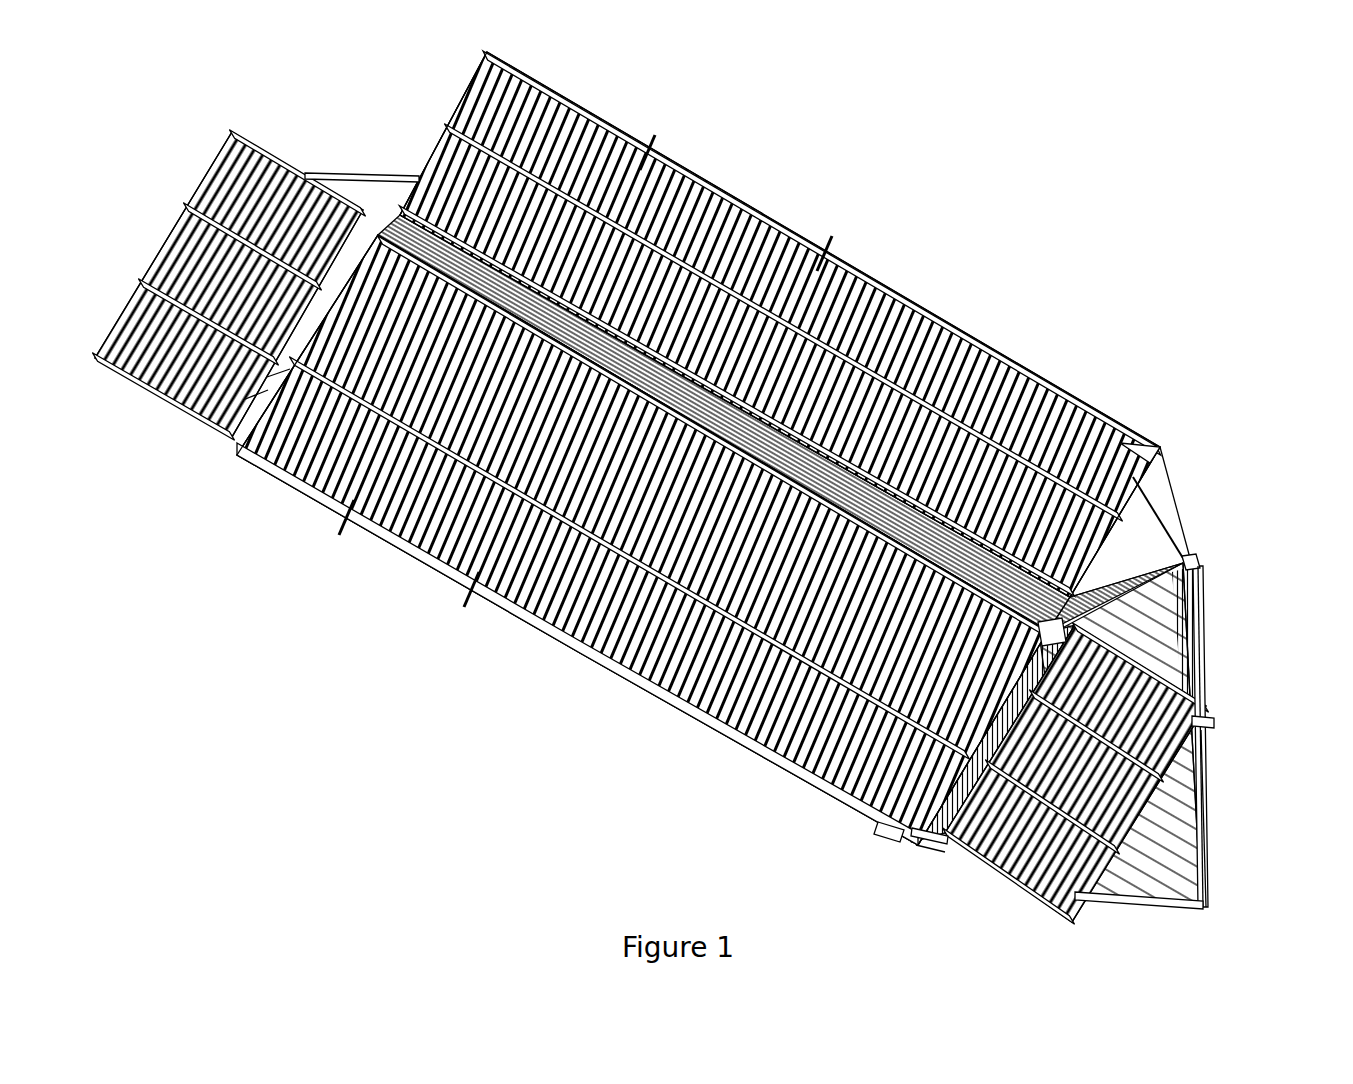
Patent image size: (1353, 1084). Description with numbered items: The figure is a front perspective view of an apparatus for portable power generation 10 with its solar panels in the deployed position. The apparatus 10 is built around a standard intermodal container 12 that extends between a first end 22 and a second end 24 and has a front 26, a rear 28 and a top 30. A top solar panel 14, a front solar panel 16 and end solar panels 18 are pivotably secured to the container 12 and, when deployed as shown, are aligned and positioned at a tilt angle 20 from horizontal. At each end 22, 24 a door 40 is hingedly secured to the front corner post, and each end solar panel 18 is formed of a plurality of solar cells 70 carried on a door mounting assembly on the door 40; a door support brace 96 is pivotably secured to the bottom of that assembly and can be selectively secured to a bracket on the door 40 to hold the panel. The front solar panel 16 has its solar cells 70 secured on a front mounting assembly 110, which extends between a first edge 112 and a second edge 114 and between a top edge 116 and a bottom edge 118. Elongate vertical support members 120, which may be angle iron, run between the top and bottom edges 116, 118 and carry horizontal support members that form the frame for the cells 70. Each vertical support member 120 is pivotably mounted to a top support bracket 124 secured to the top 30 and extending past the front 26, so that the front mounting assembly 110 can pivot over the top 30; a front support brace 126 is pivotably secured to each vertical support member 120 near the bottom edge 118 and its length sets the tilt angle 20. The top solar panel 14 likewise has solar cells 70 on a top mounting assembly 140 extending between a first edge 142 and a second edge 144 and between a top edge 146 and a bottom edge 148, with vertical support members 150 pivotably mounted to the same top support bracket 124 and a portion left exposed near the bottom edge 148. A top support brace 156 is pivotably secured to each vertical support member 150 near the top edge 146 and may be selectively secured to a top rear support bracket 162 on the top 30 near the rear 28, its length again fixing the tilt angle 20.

The apparatus for portable power generation 10 is at (1025, 181).
The intermodal container 12 is at (1210, 605).
The top solar panel 14 is at (1003, 336).
The front solar panel 16 is at (600, 650).
The end solar panel 18 is at (262, 150).
The tilt angle 20 is at (1178, 540).
The first end 22 is at (384, 212).
The second end 24 is at (1226, 657).
The front 26 is at (858, 820).
The rear 28 is at (1215, 630).
The top 30 is at (1052, 620).
The door 40 is at (1210, 832).
The solar cells 70 is at (645, 155).
The door support brace 96 is at (1118, 908).
The front mounting assembly 110 is at (540, 612).
The first edge 112 is at (226, 447).
The second edge 114 is at (920, 855).
The top edge 116 is at (735, 195).
The bottom edge 118 is at (394, 556).
The vertical support members 120 is at (890, 832).
The top support bracket 124 is at (1146, 558).
The front support brace 126 is at (932, 848).
The top mounting assembly 140 is at (870, 292).
The first edge 142 is at (458, 100).
The second edge 144 is at (1168, 457).
The top edge 146 is at (1045, 395).
The bottom edge 148 is at (1214, 722).
The vertical support members 150 is at (1138, 478).
The top support brace 156 is at (1168, 480).
The top rear support bracket 162 is at (1236, 548).